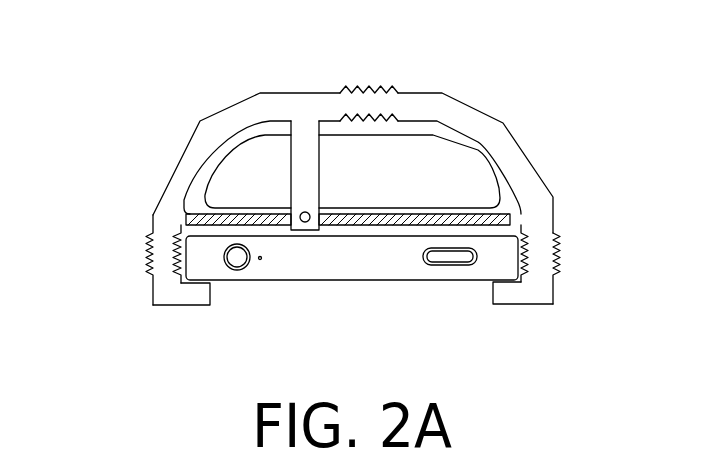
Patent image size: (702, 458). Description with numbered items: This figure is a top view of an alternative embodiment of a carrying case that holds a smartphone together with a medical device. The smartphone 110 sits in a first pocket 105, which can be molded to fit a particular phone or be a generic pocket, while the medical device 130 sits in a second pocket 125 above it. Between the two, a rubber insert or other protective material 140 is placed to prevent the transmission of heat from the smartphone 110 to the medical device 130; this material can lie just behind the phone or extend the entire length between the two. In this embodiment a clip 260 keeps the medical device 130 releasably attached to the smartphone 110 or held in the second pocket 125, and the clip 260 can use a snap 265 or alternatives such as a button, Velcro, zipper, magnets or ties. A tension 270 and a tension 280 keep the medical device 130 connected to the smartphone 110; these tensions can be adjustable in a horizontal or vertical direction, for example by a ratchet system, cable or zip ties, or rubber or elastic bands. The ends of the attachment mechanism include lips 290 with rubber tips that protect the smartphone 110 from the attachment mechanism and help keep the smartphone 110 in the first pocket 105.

The first pocket 105 is at (177, 265).
The smartphone 110 is at (345, 262).
The second pocket 125 is at (268, 123).
The medical device 130 is at (463, 173).
The protective material 140 is at (510, 218).
The clip 260 is at (297, 178).
The snap 265 is at (300, 217).
The tension 270 is at (150, 253).
The tension 280 is at (368, 88).
The lips 290 is at (190, 302).